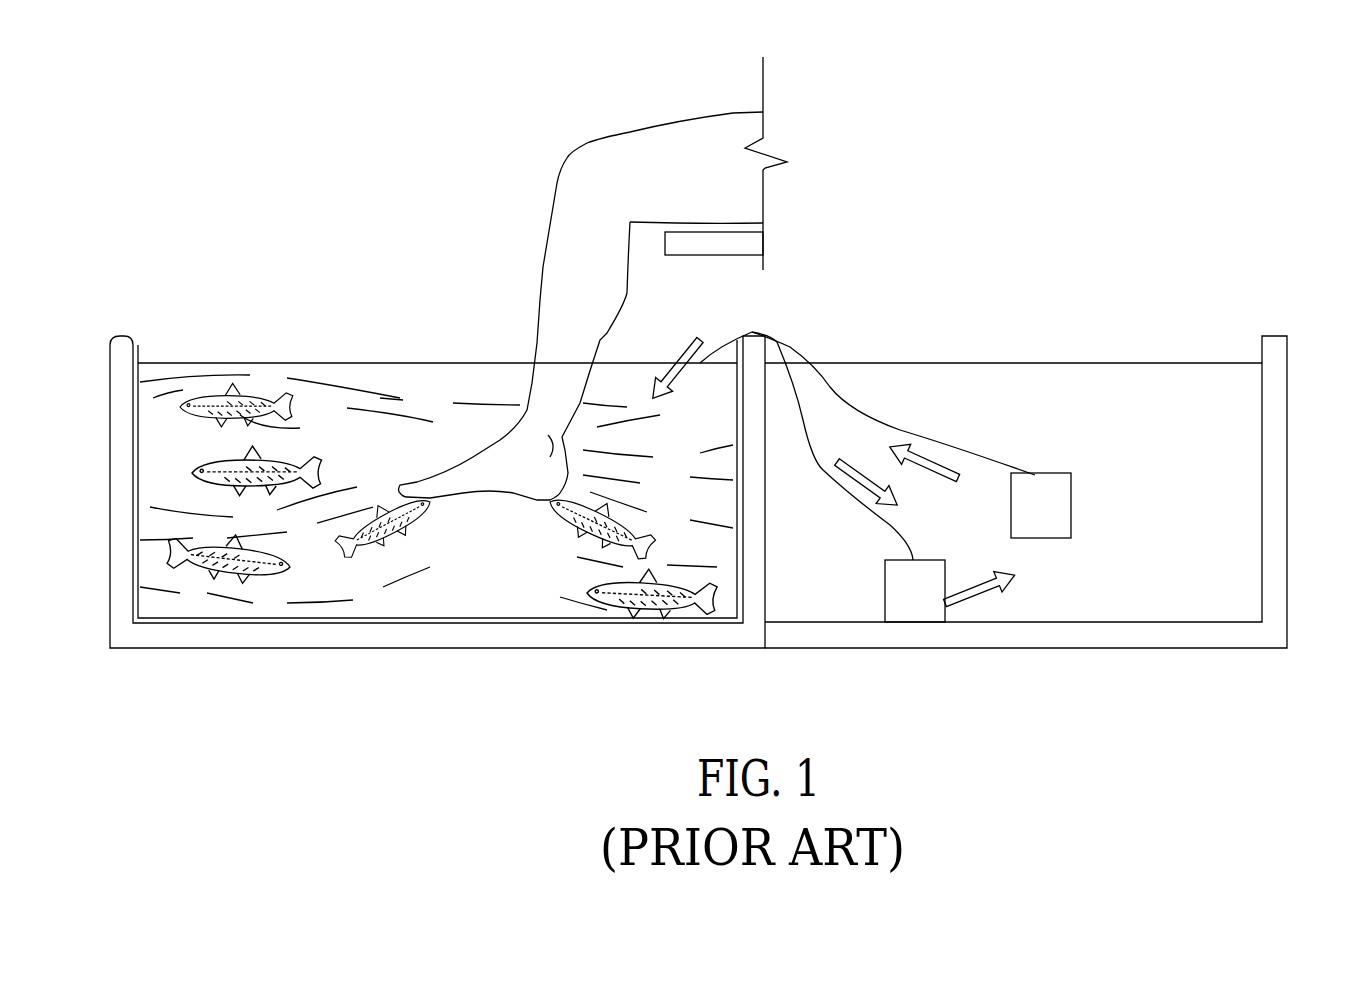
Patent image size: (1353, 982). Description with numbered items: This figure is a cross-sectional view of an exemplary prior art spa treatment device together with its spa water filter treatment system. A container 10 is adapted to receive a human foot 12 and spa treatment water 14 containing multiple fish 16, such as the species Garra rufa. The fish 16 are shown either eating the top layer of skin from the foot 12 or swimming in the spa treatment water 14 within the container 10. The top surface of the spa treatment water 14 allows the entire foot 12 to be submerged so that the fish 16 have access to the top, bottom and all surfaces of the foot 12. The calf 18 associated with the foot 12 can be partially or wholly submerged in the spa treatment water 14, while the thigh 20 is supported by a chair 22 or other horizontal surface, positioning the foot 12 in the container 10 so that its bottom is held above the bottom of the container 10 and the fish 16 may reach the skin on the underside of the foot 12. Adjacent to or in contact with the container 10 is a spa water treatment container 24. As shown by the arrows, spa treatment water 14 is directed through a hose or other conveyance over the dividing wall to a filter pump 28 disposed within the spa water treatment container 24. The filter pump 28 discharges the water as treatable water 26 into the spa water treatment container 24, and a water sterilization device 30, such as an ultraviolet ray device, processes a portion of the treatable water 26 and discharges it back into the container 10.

The container 10 is at (110, 432).
The human foot 12 is at (550, 488).
The spa treatment water 14 is at (475, 606).
The fish 16 is at (190, 415).
The calf 18 is at (627, 307).
The thigh 20 is at (647, 128).
The chair 22 is at (735, 257).
The spa water treatment container 24 is at (1280, 490).
The treatable water 26 is at (1100, 600).
The filter pump 28 is at (935, 605).
The water sterilization device 30 is at (1060, 518).